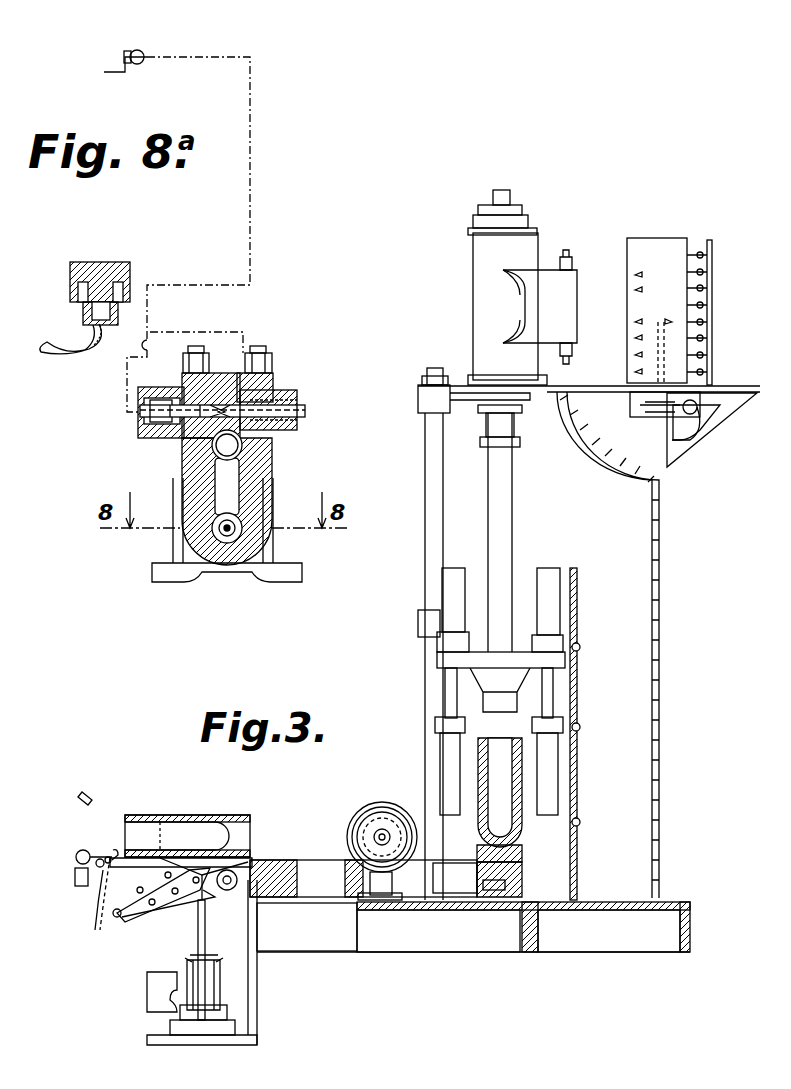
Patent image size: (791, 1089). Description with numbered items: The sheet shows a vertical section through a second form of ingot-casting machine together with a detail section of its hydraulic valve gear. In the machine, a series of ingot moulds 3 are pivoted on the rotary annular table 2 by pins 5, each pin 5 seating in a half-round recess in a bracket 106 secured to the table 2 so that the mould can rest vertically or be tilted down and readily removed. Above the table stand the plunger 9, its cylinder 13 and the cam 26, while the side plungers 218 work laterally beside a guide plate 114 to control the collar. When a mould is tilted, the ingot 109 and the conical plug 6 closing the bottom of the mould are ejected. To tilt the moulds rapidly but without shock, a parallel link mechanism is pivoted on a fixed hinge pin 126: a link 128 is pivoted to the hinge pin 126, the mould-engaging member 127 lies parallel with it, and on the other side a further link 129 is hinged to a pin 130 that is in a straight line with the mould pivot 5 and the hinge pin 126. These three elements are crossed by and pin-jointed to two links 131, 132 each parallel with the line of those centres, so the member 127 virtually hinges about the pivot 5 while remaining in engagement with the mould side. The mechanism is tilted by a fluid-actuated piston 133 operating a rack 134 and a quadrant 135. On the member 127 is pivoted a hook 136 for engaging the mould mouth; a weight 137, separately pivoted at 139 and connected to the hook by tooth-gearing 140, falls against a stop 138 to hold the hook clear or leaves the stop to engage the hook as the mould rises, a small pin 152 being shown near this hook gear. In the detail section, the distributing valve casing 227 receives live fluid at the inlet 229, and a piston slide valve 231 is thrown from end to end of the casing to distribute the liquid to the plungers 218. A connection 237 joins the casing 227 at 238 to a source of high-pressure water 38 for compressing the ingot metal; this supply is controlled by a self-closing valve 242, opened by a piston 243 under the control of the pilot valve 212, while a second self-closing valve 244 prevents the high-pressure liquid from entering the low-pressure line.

In FIG. 8a, the pilot valve 212 is at (145, 53).
In FIG. 8a, the source of supply of high pressure water 38 is at (100, 262).
In FIG. 8a, the connection 237 is at (178, 332).
In FIG. 8a, the connection point on valve casing 238 is at (258, 380).
In FIG. 8a, the self closing valve 242 is at (224, 373).
In FIG. 8a, the piston 243 is at (143, 430).
In FIG. 8a, the self closing valve 244 is at (232, 447).
In FIG. 8a, the distributing valve casing 227 is at (184, 470).
In FIG. 8a, the live fluid inlet 229 is at (232, 474).
In FIG. 8a, the piston slide valve 231 is at (222, 540).
In FIG. 3, the cylinder 13 is at (476, 316).
In FIG. 3, the cam 26 is at (630, 250).
In FIG. 3, the plunger 9 is at (505, 527).
In FIG. 3, the guide plate 114 is at (578, 643).
In FIG. 3, the side plungers 218 is at (446, 696).
In FIG. 3, the ingot 109 is at (480, 770).
In FIG. 3, the ingot mould 3 is at (140, 815).
In FIG. 3, the conical plug 6 is at (480, 848).
In FIG. 3, the pin 5 is at (522, 865).
In FIG. 3, the bracket 106 is at (520, 885).
In FIG. 3, the quadrant 135 is at (265, 915).
In FIG. 3, the rotary annular table 2 is at (363, 880).
In FIG. 3, the hinge pin 126 is at (255, 857).
In FIG. 3, the link 132 is at (205, 858).
In FIG. 3, the link 131 is at (160, 868).
In FIG. 3, the link 129 is at (198, 895).
In FIG. 3, the hook 136 is at (110, 858).
In FIG. 3, the pin 152 is at (80, 797).
In FIG. 3, the weight 137 is at (80, 855).
In FIG. 3, the pivot 139 is at (58, 865).
In FIG. 3, the stop 138 is at (80, 880).
In FIG. 3, the tooth-gearing 140 is at (100, 900).
In FIG. 3, the mould-engaging member 127 is at (120, 918).
In FIG. 3, the link 128 is at (195, 895).
In FIG. 3, the pin 130 is at (210, 970).
In FIG. 3, the rack 134 is at (220, 990).
In FIG. 3, the fluid-actuated piston 133 is at (232, 1015).